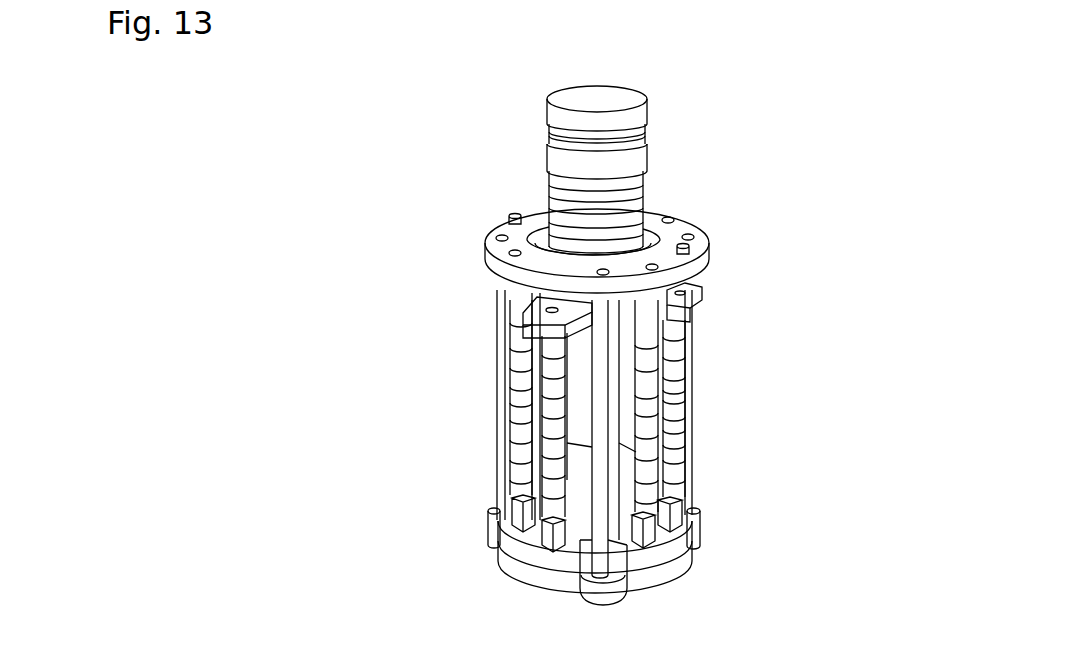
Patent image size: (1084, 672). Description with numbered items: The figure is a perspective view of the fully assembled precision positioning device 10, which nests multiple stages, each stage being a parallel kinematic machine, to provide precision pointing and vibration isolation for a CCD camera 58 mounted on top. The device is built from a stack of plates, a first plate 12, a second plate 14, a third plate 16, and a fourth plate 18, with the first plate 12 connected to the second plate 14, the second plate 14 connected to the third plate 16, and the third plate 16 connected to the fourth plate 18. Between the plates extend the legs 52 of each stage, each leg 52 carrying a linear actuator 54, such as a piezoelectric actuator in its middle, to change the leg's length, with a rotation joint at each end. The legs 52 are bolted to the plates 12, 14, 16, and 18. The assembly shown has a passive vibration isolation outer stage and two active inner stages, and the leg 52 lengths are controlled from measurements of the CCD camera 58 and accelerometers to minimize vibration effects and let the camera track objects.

The precision positioning device 10 is at (778, 100).
The first plate 12 is at (695, 308).
The second plate 14 is at (542, 558).
The third plate 16 is at (698, 263).
The fourth plate 18 is at (680, 562).
The leg 52 is at (517, 448).
The linear actuator 54 is at (667, 378).
The CCD camera 58 is at (552, 152).